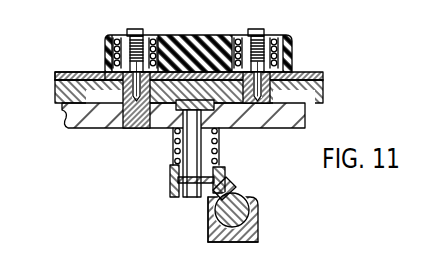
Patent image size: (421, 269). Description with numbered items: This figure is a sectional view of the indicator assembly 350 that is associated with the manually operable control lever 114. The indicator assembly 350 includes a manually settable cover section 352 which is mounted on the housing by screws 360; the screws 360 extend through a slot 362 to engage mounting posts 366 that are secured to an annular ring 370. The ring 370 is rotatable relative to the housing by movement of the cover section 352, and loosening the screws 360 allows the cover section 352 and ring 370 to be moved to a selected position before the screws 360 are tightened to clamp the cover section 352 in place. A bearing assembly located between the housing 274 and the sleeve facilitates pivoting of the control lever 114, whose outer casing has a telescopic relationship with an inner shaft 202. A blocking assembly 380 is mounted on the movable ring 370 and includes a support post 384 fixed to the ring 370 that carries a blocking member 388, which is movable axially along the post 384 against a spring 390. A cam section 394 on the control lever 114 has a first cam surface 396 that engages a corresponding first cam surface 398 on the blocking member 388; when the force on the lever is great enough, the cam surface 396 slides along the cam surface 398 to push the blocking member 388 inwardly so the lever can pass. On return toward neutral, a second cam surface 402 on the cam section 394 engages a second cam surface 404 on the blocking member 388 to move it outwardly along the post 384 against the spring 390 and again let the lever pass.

The indicator assembly 350 is at (234, 52).
The cover section 352 is at (212, 36).
The screws 360 is at (150, 18).
The slot 362 is at (102, 72).
The housing 274 is at (325, 78).
The mounting posts 366 is at (134, 100).
The annular ring 370 is at (302, 114).
The support post 384 is at (184, 154).
The spring 390 is at (218, 140).
The blocking assembly 380 is at (193, 192).
The blocking member 388 is at (170, 192).
The second cam surface 404 is at (187, 197).
The first cam surface 398 is at (222, 172).
The second cam surface 402 is at (244, 198).
The inner shaft 202 is at (256, 210).
The cam section 394 is at (261, 238).
The manually operable control lever 114 is at (207, 228).
The first cam surface 396 is at (208, 234).